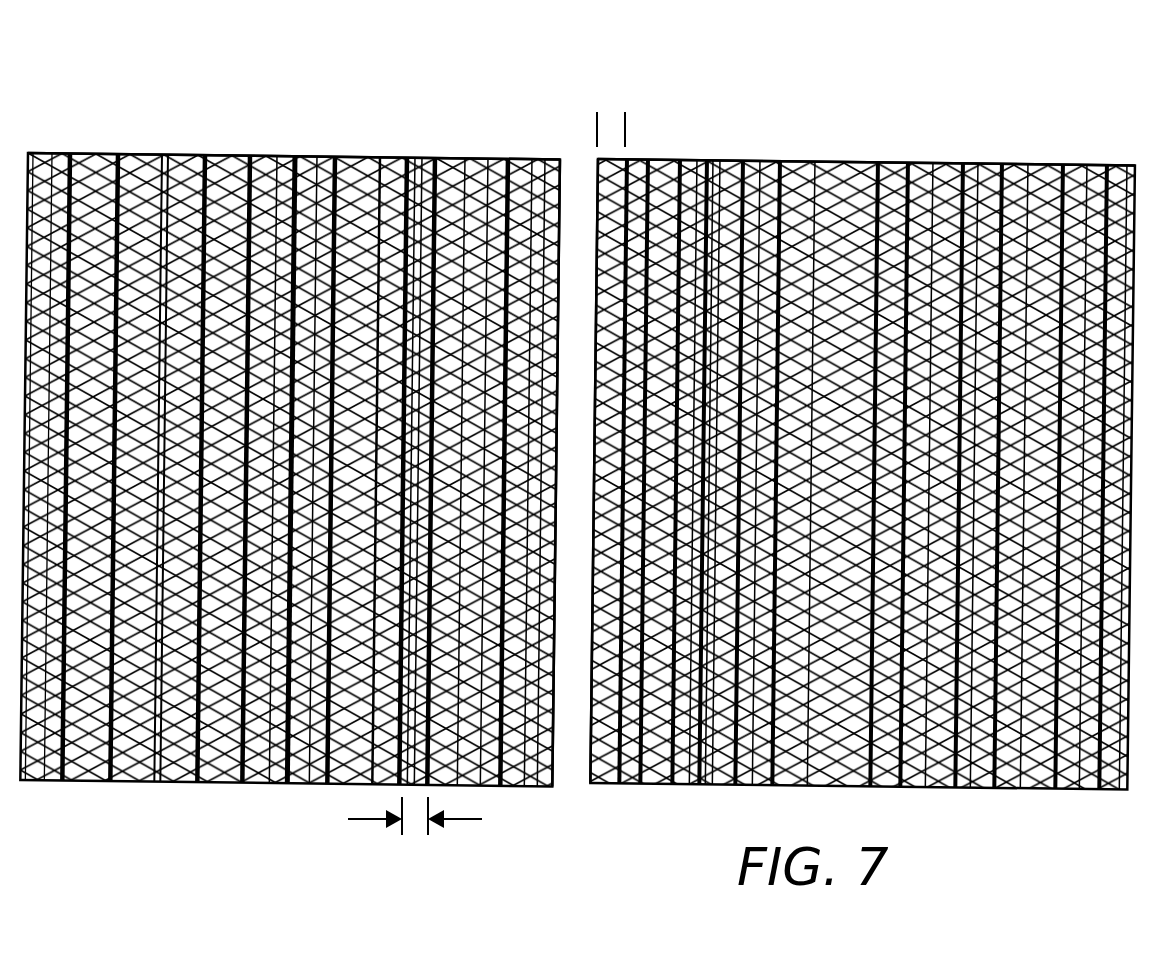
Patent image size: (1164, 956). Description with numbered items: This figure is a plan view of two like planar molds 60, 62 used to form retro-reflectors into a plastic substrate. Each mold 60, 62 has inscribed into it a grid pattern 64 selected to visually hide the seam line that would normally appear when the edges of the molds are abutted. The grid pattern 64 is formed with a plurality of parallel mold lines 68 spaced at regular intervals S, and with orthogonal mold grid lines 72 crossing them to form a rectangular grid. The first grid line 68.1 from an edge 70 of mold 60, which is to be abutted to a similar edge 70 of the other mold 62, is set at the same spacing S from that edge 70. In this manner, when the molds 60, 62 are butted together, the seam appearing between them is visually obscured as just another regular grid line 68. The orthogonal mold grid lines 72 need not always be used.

The planar mold 60 is at (385, 157).
The planar mold 62 is at (1003, 163).
The grid pattern 64 is at (146, 140).
The mold lines 68 is at (267, 157).
The first grid line 68.1 is at (536, 157).
The edge 70 is at (553, 757).
The orthogonal mold grid lines 72 is at (74, 188).
The spacing S is at (417, 827).